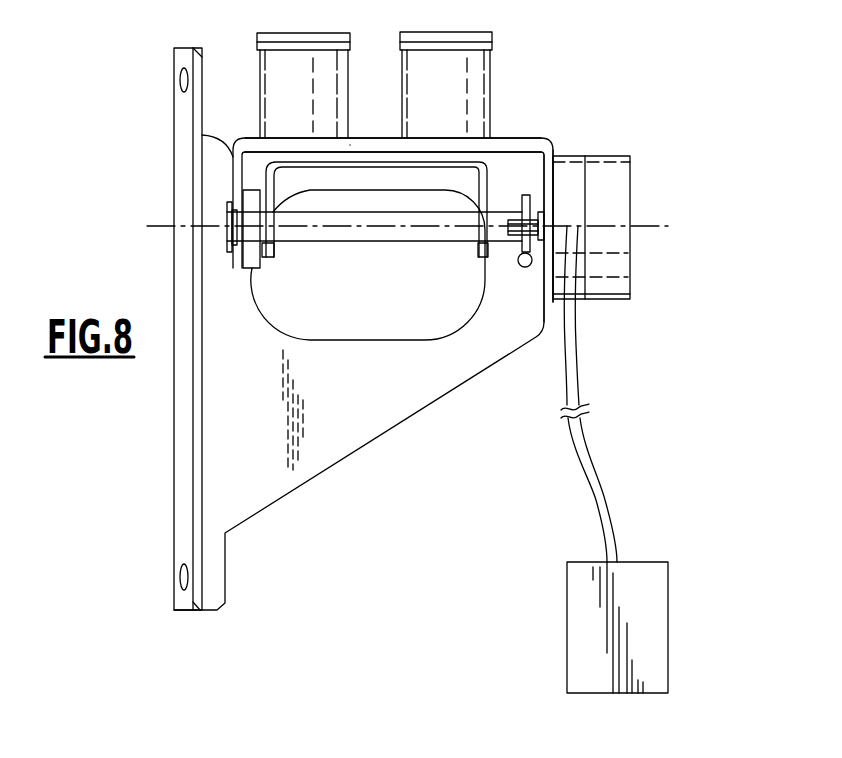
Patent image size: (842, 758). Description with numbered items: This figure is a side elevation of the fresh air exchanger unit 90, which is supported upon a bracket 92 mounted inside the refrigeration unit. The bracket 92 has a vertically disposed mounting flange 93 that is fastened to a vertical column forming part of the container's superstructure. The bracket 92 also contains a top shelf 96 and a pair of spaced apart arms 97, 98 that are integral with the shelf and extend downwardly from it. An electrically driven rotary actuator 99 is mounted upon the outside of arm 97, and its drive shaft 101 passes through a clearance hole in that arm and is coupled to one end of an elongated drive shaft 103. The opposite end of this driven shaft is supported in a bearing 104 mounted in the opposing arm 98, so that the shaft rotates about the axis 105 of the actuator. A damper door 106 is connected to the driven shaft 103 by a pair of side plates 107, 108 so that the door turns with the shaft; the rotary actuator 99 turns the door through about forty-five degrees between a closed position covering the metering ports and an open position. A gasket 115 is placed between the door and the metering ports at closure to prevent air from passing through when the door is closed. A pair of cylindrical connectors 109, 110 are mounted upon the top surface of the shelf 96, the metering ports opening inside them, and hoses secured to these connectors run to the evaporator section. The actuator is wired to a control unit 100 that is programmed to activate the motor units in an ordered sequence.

The fresh air exchanger unit 90 is at (564, 99).
The bracket 92 is at (327, 497).
The mounting flange 93 is at (181, 506).
The top shelf 96 is at (525, 137).
The arm 97 is at (555, 183).
The arm 98 is at (232, 180).
The rotary actuator 99 is at (632, 238).
The control unit 100 is at (669, 633).
The drive shaft 101 is at (533, 223).
The elongated drive shaft 103 is at (370, 245).
The bearing 104 is at (253, 268).
The vertical axis 105 is at (657, 225).
The damper door 106 is at (370, 163).
The side plate 107 is at (273, 249).
The side plate 108 is at (481, 247).
The cylindrical connector 109 is at (258, 82).
The cylindrical connector 110 is at (493, 58).
The gasket 115 is at (413, 153).